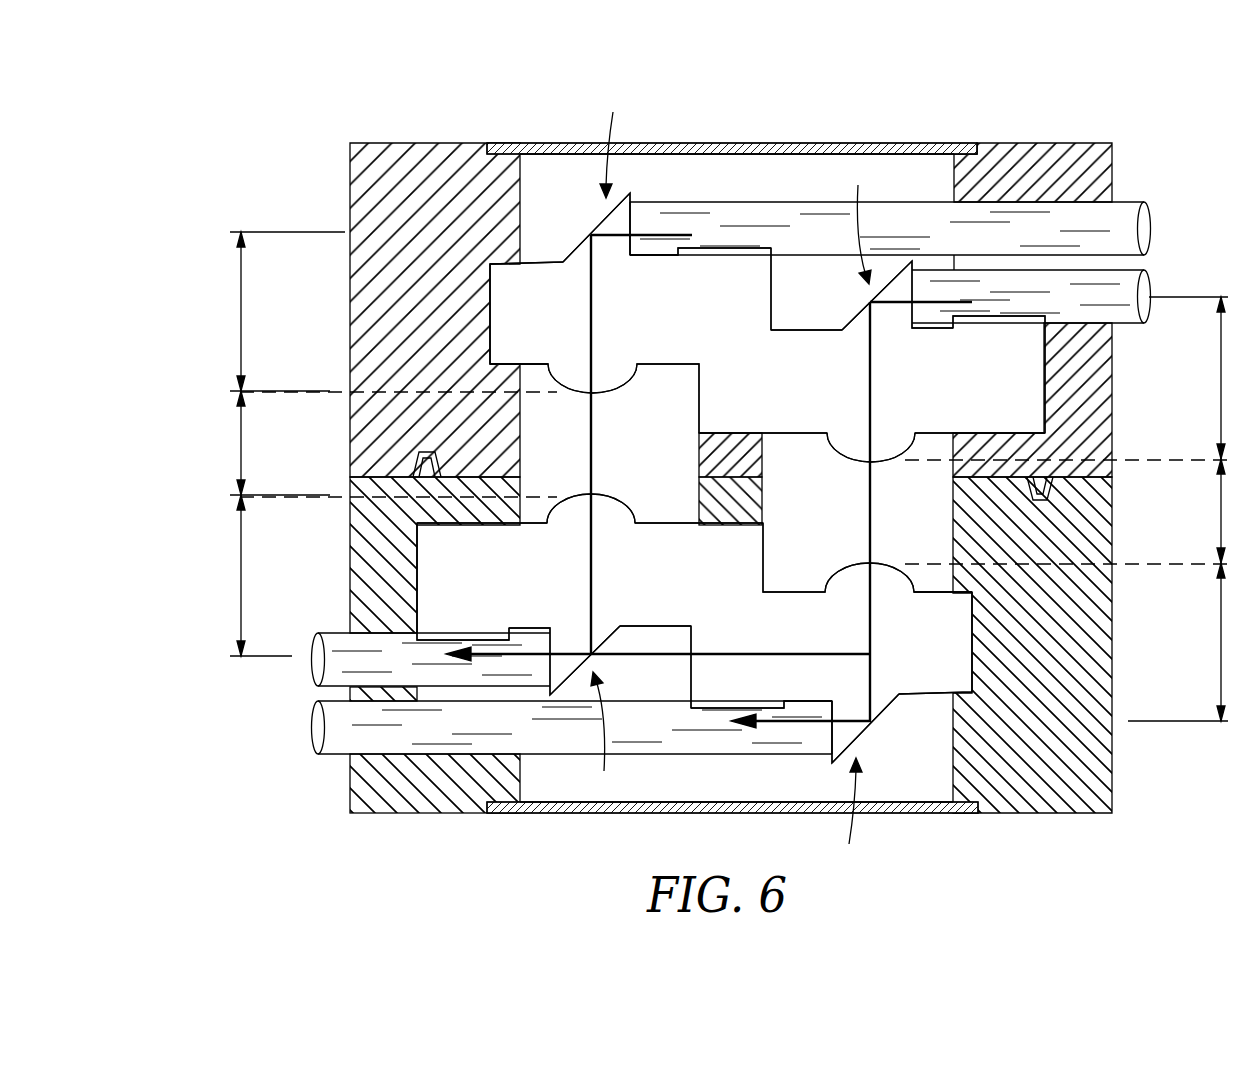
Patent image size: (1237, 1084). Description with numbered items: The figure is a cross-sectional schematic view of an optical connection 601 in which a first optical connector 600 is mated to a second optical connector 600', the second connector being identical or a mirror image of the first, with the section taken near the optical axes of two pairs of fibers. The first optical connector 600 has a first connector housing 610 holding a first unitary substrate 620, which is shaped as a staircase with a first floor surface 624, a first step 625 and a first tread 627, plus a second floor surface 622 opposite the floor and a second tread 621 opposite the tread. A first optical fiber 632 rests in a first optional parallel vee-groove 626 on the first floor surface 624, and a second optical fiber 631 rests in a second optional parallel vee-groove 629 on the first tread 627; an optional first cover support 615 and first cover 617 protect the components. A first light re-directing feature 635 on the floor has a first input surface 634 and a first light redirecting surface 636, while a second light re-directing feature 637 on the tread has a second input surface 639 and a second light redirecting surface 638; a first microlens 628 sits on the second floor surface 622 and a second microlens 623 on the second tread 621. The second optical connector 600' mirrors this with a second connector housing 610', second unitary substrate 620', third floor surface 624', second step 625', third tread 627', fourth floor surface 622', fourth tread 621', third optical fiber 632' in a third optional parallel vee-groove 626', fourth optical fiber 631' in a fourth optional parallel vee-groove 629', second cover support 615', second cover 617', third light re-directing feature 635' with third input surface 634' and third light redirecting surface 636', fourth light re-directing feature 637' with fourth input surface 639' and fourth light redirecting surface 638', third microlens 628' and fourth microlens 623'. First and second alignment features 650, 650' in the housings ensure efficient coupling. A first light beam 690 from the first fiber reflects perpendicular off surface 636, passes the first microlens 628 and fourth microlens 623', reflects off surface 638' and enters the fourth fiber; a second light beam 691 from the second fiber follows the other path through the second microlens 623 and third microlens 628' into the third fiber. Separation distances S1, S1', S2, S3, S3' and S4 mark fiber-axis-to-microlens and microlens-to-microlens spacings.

The first optical connector 600 is at (329, 102).
The second optical connector 600' is at (296, 841).
The optical connection 601 is at (226, 129).
The first connector housing 610 is at (731, 282).
The second connector housing 610' is at (731, 673).
The first cover support 615 is at (730, 120).
The second cover support 615' is at (738, 835).
The first cover 617 is at (737, 120).
The second cover 617' is at (736, 835).
The first unitary substrate 620 is at (659, 327).
The second unitary substrate 620' is at (804, 628).
The second tread 621 is at (413, 360).
The fourth tread 621' is at (1052, 595).
The second floor surface 622 is at (872, 411).
The fourth floor surface 622' is at (590, 547).
The second microlens 623 is at (594, 398).
The fourth microlens 623' is at (867, 557).
The first floor surface 624 is at (806, 359).
The third floor surface 624' is at (655, 597).
The first step 625 is at (721, 297).
The second step 625' is at (744, 656).
The first optional parallel vee-groove 626 is at (999, 374).
The third optional parallel vee-groove 626' is at (463, 581).
The first tread 627 is at (526, 313).
The third tread 627' is at (935, 643).
The first microlens 628 is at (851, 471).
The third microlens 628' is at (612, 486).
The second optional parallel vee-groove 629 is at (700, 279).
The fourth optional parallel vee-groove 629' is at (761, 676).
The second optical fiber 631 is at (914, 205).
The fourth optical fiber 631' is at (547, 749).
The first optical fiber 632 is at (1065, 284).
The third optical fiber 632' is at (396, 674).
The first input surface 634 is at (940, 403).
The third input surface 634' is at (577, 552).
The first light re-directing feature 635 is at (862, 221).
The third light re-directing feature 635' is at (605, 734).
The first light redirecting surface 636 is at (870, 295).
The third light redirecting surface 636' is at (593, 660).
The second light re-directing feature 637 is at (621, 142).
The fourth light re-directing feature 637' is at (847, 813).
The second light redirecting surface 638 is at (588, 226).
The fourth light redirecting surface 638' is at (880, 728).
The second input surface 639 is at (658, 206).
The fourth input surface 639' is at (805, 746).
The first alignment feature 650 is at (356, 456).
The second alignment feature 650' is at (1111, 502).
The first light beam 690 is at (770, 727).
The second light beam 691 is at (493, 657).
The first optical fiber separation distance S1 is at (1191, 378).
The second optical fiber separation distance S1' is at (1182, 642).
The first microlens separation distance S2 is at (1220, 511).
The third optical fiber separation distance S3 is at (285, 311).
The fourth optical fiber separation distance S3' is at (259, 575).
The second microlens separation distance S4 is at (280, 443).